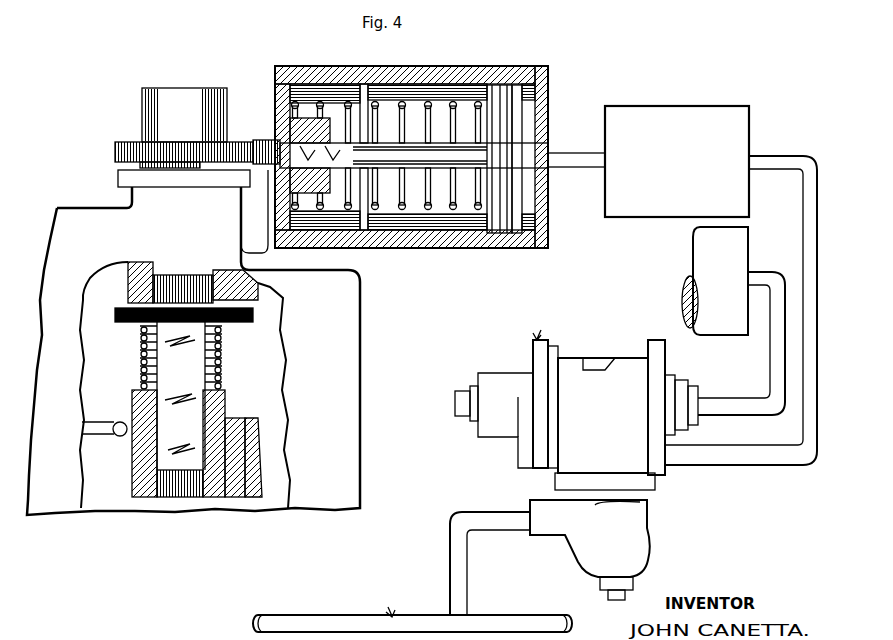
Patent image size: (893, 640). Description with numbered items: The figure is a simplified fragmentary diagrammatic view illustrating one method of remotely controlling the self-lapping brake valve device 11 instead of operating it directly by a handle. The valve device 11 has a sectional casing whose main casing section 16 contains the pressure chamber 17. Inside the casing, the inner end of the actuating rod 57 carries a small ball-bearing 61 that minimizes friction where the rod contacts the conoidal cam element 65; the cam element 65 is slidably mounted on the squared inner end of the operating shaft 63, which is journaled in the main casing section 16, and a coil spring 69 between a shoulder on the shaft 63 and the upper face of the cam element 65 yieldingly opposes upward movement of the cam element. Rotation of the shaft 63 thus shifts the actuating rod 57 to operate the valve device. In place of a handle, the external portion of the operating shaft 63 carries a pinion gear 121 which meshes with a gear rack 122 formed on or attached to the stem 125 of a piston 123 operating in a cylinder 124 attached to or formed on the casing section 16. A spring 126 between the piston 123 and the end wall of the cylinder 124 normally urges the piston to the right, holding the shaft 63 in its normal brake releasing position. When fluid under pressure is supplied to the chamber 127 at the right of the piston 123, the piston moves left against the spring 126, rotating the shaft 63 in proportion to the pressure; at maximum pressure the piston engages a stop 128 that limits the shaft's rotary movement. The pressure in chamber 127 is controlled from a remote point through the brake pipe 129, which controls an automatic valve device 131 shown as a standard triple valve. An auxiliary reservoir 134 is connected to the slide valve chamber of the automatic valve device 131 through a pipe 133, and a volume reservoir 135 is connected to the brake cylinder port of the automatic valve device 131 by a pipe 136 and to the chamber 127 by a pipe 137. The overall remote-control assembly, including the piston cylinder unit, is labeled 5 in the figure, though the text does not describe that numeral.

The pressure cylinder device 5 is at (411, 138).
The self-lapping brake valve device 11 is at (364, 360).
The main casing section 16 is at (350, 316).
The pressure chamber 17 is at (108, 276).
The actuating rod 57 is at (99, 430).
The ball-bearing 61 is at (117, 422).
The operating shaft 63 is at (142, 97).
The conoidal cam element 65 is at (239, 417).
The coil spring 69 is at (222, 347).
The pinion gear 121 is at (115, 151).
The gear rack 122 is at (265, 140).
The piston 123 is at (497, 84).
The cylinder 124 is at (410, 70).
The stem 125 is at (437, 210).
The spring 126 is at (436, 97).
The chamber 127 is at (527, 84).
The stop 128 is at (365, 232).
The brake pipe 129 is at (517, 617).
The automatic valve device 131 is at (503, 366).
The pipe 133 is at (733, 403).
The auxiliary reservoir 134 is at (742, 237).
The volume reservoir 135 is at (680, 112).
The pipe 136 is at (774, 162).
The pipe 137 is at (573, 157).